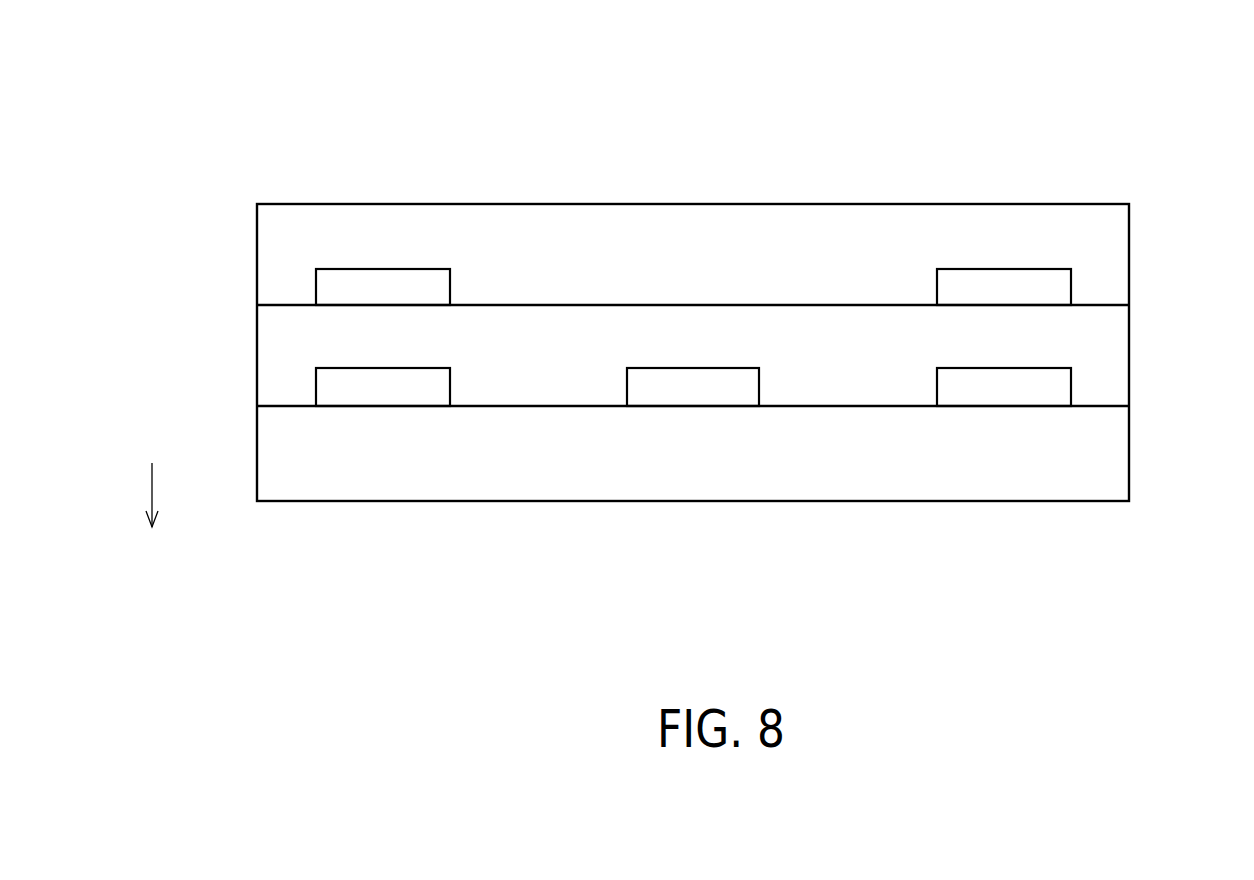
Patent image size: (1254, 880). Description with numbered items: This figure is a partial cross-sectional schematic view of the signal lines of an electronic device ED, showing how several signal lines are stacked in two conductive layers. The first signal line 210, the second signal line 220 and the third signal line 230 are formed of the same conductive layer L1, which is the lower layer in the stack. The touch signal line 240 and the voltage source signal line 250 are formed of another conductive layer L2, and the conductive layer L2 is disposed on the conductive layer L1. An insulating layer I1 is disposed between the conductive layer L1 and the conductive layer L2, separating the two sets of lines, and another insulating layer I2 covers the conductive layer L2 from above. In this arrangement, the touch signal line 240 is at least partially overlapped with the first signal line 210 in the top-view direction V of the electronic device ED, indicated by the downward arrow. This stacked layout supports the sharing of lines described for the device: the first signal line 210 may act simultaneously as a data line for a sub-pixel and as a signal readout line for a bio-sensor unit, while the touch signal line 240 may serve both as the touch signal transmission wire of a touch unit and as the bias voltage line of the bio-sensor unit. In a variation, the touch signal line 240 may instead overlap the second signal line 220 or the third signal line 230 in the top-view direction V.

The first signal line 210 is at (1026, 402).
The second signal line 220 is at (715, 402).
The third signal line 230 is at (405, 402).
The touch signal line 240 is at (1026, 302).
The voltage source signal line 250 is at (405, 302).
The conductive layer L1 is at (1071, 388).
The conductive layer L2 is at (1071, 288).
The insulating layer I1 is at (287, 344).
The insulating layer I2 is at (287, 243).
The electronic device ED is at (1066, 128).
The top-view direction V is at (140, 495).